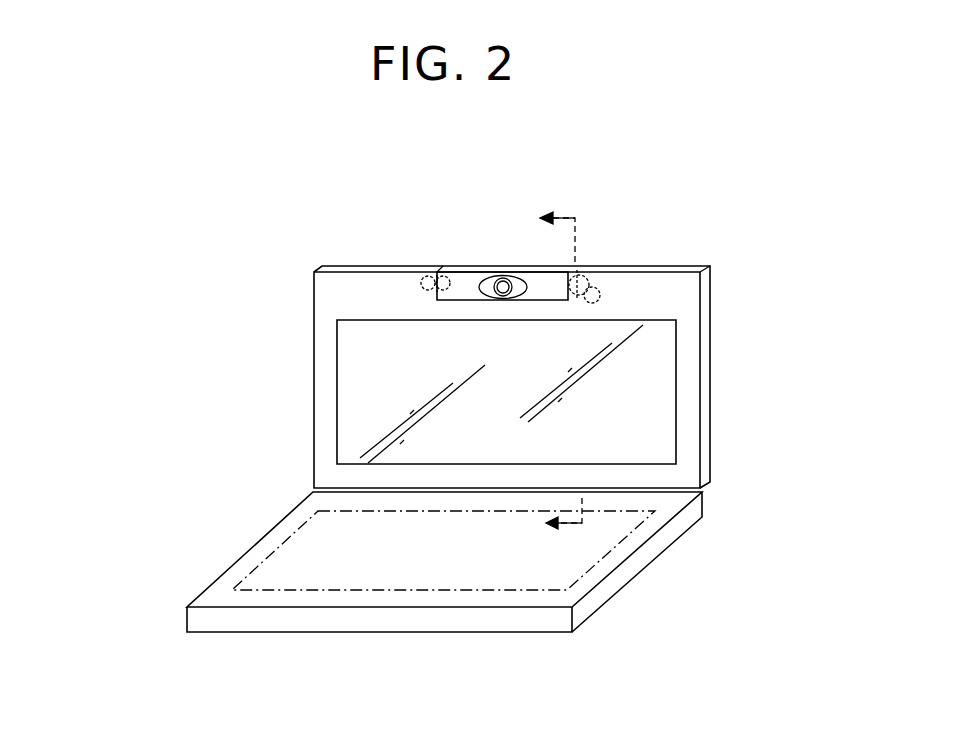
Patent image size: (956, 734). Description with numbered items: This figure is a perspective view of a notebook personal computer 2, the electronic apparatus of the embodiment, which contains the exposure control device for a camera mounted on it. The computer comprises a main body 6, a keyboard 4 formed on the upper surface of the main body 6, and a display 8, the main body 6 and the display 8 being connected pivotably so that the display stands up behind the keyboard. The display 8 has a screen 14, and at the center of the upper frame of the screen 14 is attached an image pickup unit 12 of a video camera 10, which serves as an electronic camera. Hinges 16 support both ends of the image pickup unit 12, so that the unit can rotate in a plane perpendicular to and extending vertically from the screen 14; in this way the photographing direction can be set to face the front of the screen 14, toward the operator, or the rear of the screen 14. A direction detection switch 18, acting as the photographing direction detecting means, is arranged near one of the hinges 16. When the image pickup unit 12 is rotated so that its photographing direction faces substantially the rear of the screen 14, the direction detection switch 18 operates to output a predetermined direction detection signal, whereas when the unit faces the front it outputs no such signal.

The notebook personal computer 2 is at (233, 242).
The keyboard 4 is at (620, 542).
The main body 6 is at (595, 598).
The display 8 is at (706, 427).
The video camera 10 is at (460, 243).
The image pickup unit 12 is at (488, 271).
The screen 14 is at (625, 372).
The hinges 16 is at (430, 266).
The direction detection switch 18 is at (608, 292).